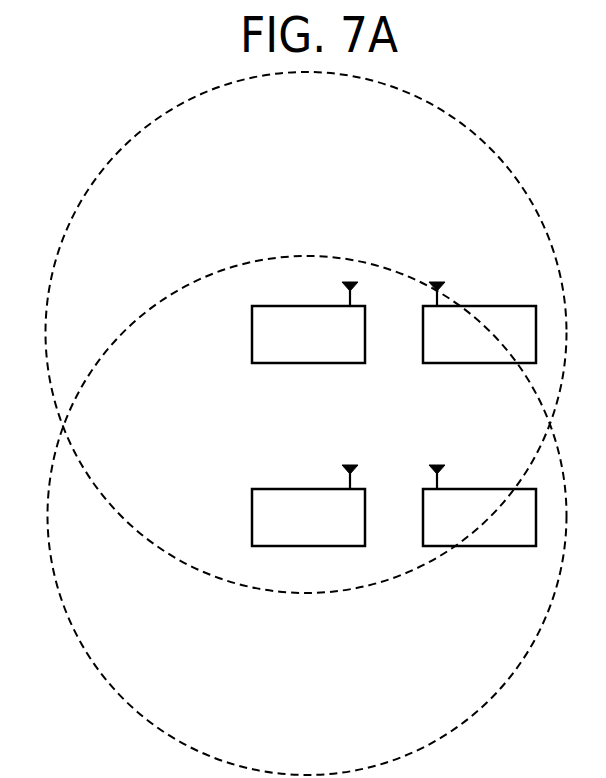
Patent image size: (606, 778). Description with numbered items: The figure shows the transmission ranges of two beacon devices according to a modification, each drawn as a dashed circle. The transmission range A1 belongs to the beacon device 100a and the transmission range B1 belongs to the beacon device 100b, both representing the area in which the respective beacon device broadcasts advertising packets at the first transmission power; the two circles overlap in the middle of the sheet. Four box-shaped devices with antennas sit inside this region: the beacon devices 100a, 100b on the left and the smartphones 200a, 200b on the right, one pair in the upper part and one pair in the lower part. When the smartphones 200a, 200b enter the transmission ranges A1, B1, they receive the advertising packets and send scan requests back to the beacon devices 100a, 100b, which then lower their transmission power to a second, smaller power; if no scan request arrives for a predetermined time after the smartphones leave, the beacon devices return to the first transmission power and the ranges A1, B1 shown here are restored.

The transmission range A1 is at (134, 142).
The transmission range B1 is at (51, 565).
The beacon device 100a is at (251, 336).
The beacon device 100b is at (251, 515).
The smartphone 200a is at (525, 288).
The smartphone 200b is at (500, 469).